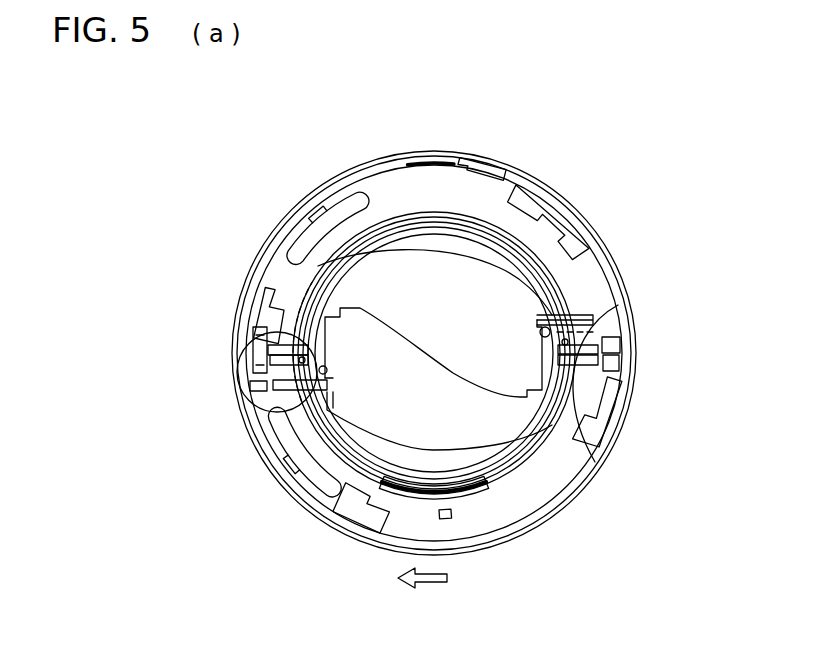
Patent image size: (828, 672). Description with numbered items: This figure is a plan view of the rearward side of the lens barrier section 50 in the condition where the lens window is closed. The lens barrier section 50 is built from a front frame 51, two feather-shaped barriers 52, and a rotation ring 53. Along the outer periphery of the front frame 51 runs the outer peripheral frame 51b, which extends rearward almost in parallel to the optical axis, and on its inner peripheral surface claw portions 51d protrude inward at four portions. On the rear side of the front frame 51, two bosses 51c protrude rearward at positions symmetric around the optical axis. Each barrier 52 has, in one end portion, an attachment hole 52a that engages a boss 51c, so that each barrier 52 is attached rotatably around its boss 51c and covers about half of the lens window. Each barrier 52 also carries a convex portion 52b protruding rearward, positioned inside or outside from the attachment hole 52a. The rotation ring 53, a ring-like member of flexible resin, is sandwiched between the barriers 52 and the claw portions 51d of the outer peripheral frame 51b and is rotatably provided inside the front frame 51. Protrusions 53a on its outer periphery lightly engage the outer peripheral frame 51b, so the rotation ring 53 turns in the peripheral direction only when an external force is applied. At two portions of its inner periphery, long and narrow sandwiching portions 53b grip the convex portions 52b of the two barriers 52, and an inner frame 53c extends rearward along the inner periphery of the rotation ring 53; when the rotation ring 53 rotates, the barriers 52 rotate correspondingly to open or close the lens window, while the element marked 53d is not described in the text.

The lens barrier section 50 is at (361, 100).
The front frame 51 is at (545, 172).
The outer peripheral frame 51b is at (490, 162).
The boss 51c is at (252, 387).
The claw portion 51d is at (256, 304).
The barrier 52 is at (423, 267).
The attachment hole 52a is at (250, 353).
The convex portion 52b is at (270, 404).
The rotation ring 53 is at (578, 218).
The protrusion 53a is at (313, 218).
The sandwiching portion 53b is at (280, 372).
The inner frame 53c is at (492, 482).
The drive segment 53d is at (452, 527).